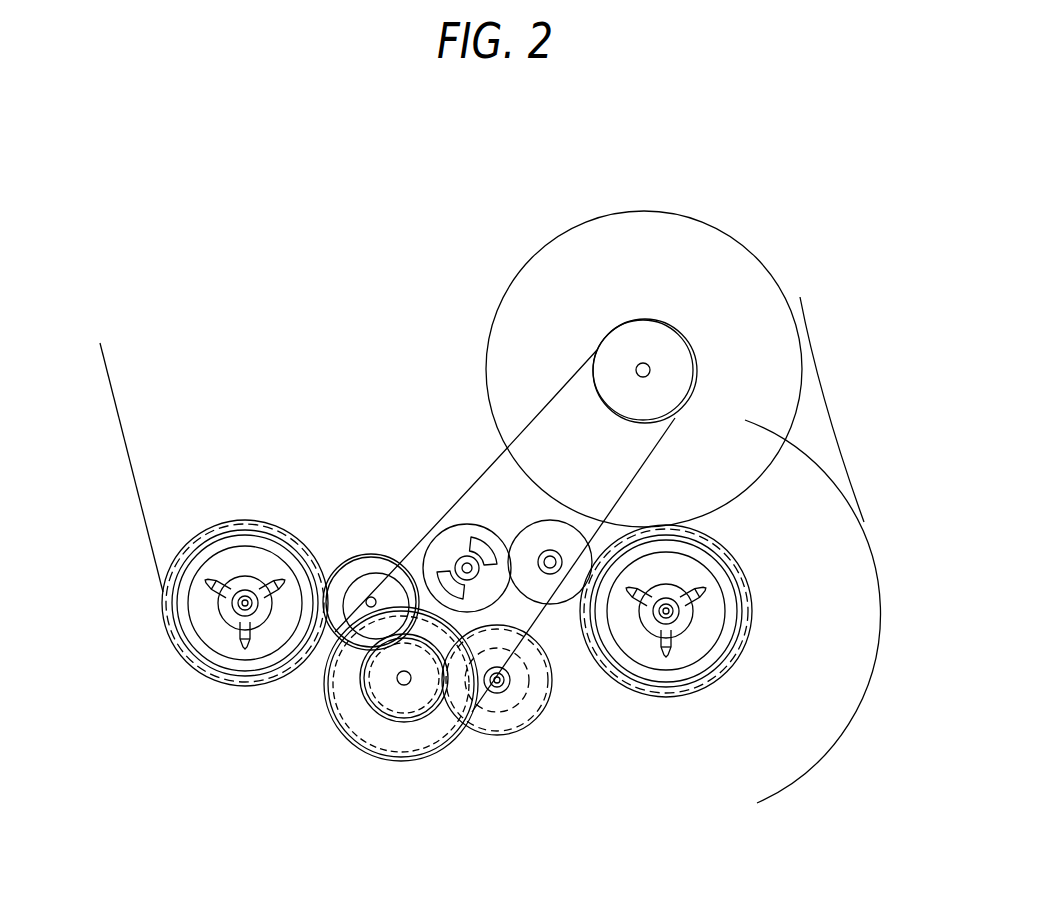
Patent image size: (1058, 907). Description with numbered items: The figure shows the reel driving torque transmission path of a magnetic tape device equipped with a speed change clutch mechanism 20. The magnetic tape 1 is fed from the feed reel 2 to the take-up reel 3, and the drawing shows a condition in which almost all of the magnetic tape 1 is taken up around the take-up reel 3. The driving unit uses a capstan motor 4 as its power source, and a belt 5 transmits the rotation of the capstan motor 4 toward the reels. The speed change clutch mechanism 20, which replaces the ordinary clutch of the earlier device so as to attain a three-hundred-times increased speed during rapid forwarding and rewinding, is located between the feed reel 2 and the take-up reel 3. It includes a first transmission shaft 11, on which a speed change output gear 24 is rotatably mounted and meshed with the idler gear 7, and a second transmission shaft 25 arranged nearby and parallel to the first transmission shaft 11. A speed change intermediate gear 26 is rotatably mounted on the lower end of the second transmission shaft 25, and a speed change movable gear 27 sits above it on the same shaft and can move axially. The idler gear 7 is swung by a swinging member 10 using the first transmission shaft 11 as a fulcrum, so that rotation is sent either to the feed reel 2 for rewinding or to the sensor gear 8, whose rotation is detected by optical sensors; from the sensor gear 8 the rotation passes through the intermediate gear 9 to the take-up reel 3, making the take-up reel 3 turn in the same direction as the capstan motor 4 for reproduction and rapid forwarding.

The magnetic tape 1 is at (132, 473).
The feed reel 2 is at (205, 635).
The take-up reel 3 is at (693, 653).
The capstan motor 4 is at (680, 240).
The belt 5 is at (490, 473).
The idler gear 7 is at (365, 553).
The sensor gear 8 is at (456, 518).
The intermediate gear 9 is at (562, 605).
The swinging member 10 is at (326, 592).
The first transmission shaft 11 is at (407, 684).
The speed change clutch mechanism 20 is at (394, 745).
The speed change output gear 24 is at (370, 748).
The second transmission shaft 25 is at (498, 693).
The speed change intermediate gear 26 is at (515, 707).
The speed change movable gear 27 is at (528, 714).